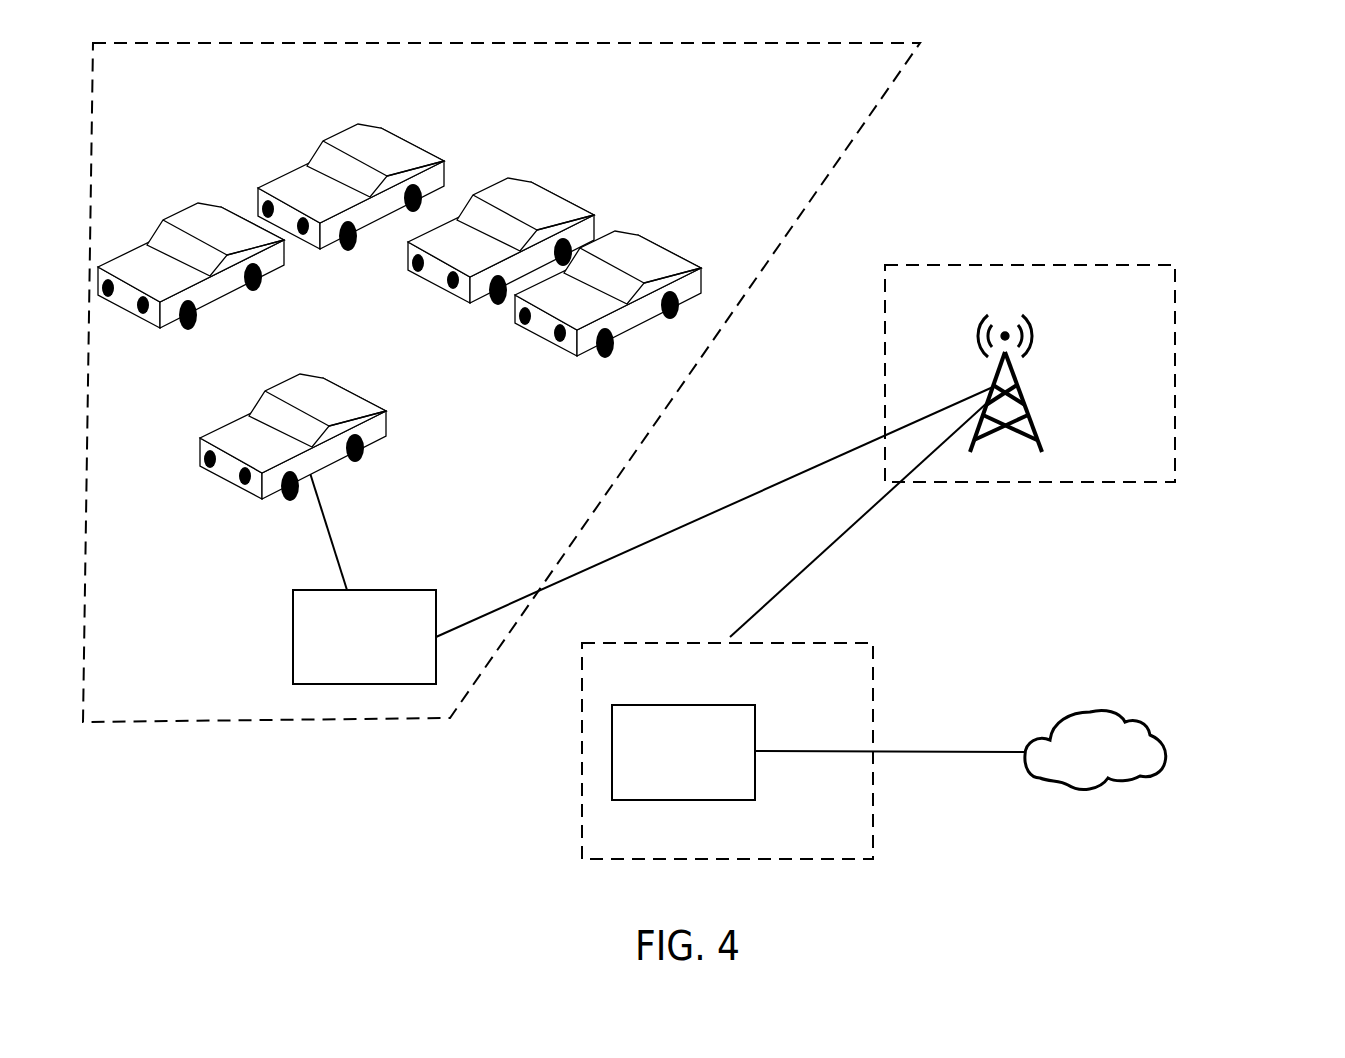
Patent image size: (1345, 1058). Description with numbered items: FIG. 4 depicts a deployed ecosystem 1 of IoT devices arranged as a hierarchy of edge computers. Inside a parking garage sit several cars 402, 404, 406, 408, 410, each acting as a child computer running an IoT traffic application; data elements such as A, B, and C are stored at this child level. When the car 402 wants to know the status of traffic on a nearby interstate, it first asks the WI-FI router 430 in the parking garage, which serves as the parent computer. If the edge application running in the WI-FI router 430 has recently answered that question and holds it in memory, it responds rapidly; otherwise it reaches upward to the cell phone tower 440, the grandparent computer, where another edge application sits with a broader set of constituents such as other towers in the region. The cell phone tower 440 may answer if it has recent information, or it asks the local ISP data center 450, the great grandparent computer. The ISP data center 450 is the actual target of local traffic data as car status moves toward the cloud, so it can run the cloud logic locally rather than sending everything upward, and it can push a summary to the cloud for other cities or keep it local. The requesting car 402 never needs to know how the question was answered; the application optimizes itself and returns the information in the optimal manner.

The system 1 is at (1269, 168).
The car 402 is at (307, 337).
The car 404 is at (205, 167).
The car 406 is at (367, 89).
The car 408 is at (513, 140).
The car 410 is at (620, 196).
The WI-FI router 430 is at (429, 581).
The cell phone tower 440 is at (1035, 309).
The ISP data center 450 is at (747, 695).